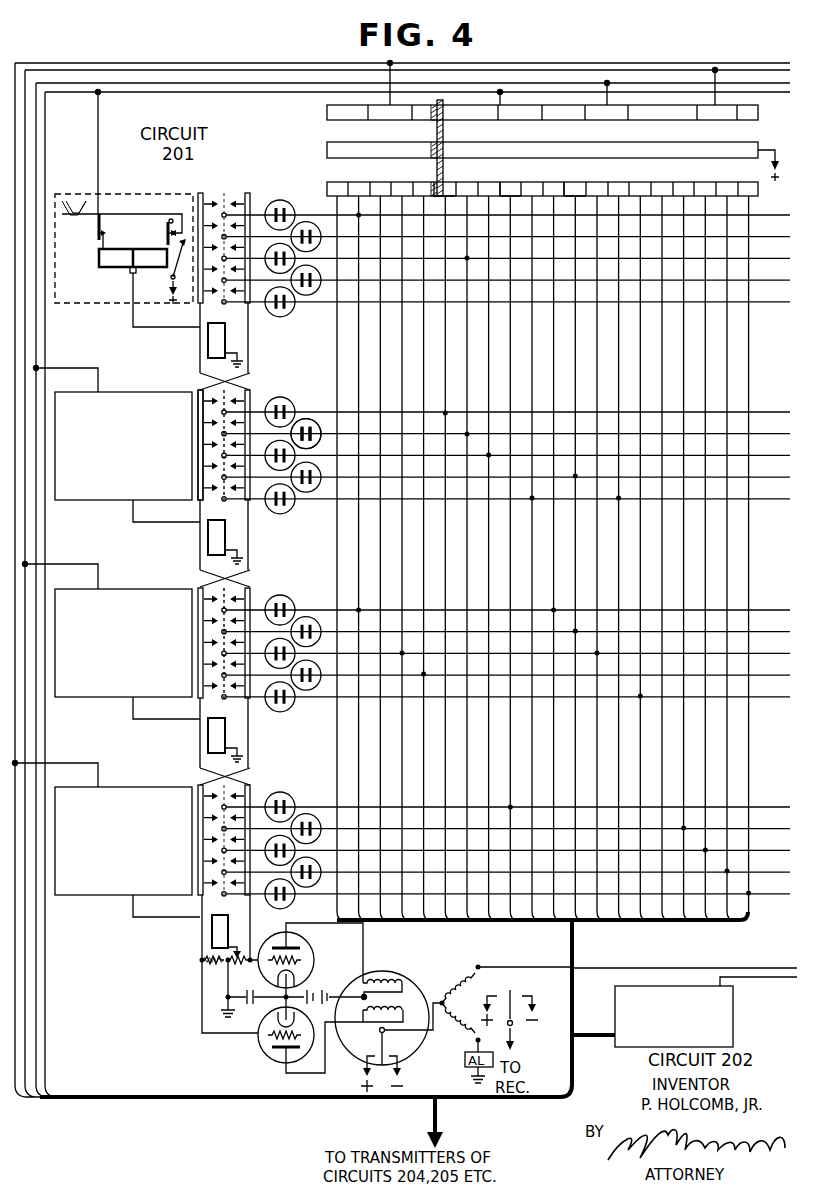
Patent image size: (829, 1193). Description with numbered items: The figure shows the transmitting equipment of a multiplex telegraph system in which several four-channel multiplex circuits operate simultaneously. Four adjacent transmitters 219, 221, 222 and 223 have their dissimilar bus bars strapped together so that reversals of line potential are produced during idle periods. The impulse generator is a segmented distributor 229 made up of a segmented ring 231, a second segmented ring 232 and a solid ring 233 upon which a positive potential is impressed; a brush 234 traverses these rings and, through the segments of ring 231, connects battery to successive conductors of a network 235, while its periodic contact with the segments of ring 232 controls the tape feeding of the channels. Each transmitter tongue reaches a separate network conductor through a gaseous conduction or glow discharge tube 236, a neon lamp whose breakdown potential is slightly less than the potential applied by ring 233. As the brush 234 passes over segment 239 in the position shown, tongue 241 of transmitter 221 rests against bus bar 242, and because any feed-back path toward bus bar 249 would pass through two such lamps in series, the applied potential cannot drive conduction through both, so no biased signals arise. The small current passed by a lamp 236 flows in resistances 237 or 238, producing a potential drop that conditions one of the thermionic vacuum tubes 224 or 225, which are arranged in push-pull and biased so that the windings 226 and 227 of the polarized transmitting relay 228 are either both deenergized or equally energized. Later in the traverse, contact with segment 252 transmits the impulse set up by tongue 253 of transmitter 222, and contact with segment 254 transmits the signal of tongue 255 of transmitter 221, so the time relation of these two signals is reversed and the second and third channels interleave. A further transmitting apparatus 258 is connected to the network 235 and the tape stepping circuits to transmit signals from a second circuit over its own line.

The transmitter 219 is at (236, 178).
The transmitter 221 is at (200, 378).
The transmitter 222 is at (200, 580).
The transmitter 223 is at (200, 778).
The thermionic vacuum tube 224 is at (300, 944).
The thermionic vacuum tube 225 is at (270, 1050).
The winding 226 is at (376, 980).
The winding 227 is at (404, 1008).
The polarized transmitting relay 228 is at (410, 1044).
The segmented distributor 229 is at (577, 142).
The segmented ring 231 is at (327, 191).
The segmented ring 232 is at (327, 112).
The solid ring 233 is at (327, 150).
The brush 234 is at (443, 131).
The network 235 is at (598, 921).
The glow discharge tube 236 is at (306, 419).
The resistance 237 is at (240, 964).
The resistance 238 is at (205, 966).
The segment 239 is at (450, 192).
The tongue 241 is at (237, 383).
The bus bar 242 is at (198, 395).
The bus bar 249 is at (252, 398).
The segment 252 is at (508, 192).
The tongue 253 is at (222, 618).
The segment 254 is at (573, 192).
The tongue 255 is at (222, 463).
The transmitting apparatus 258 is at (733, 1017).